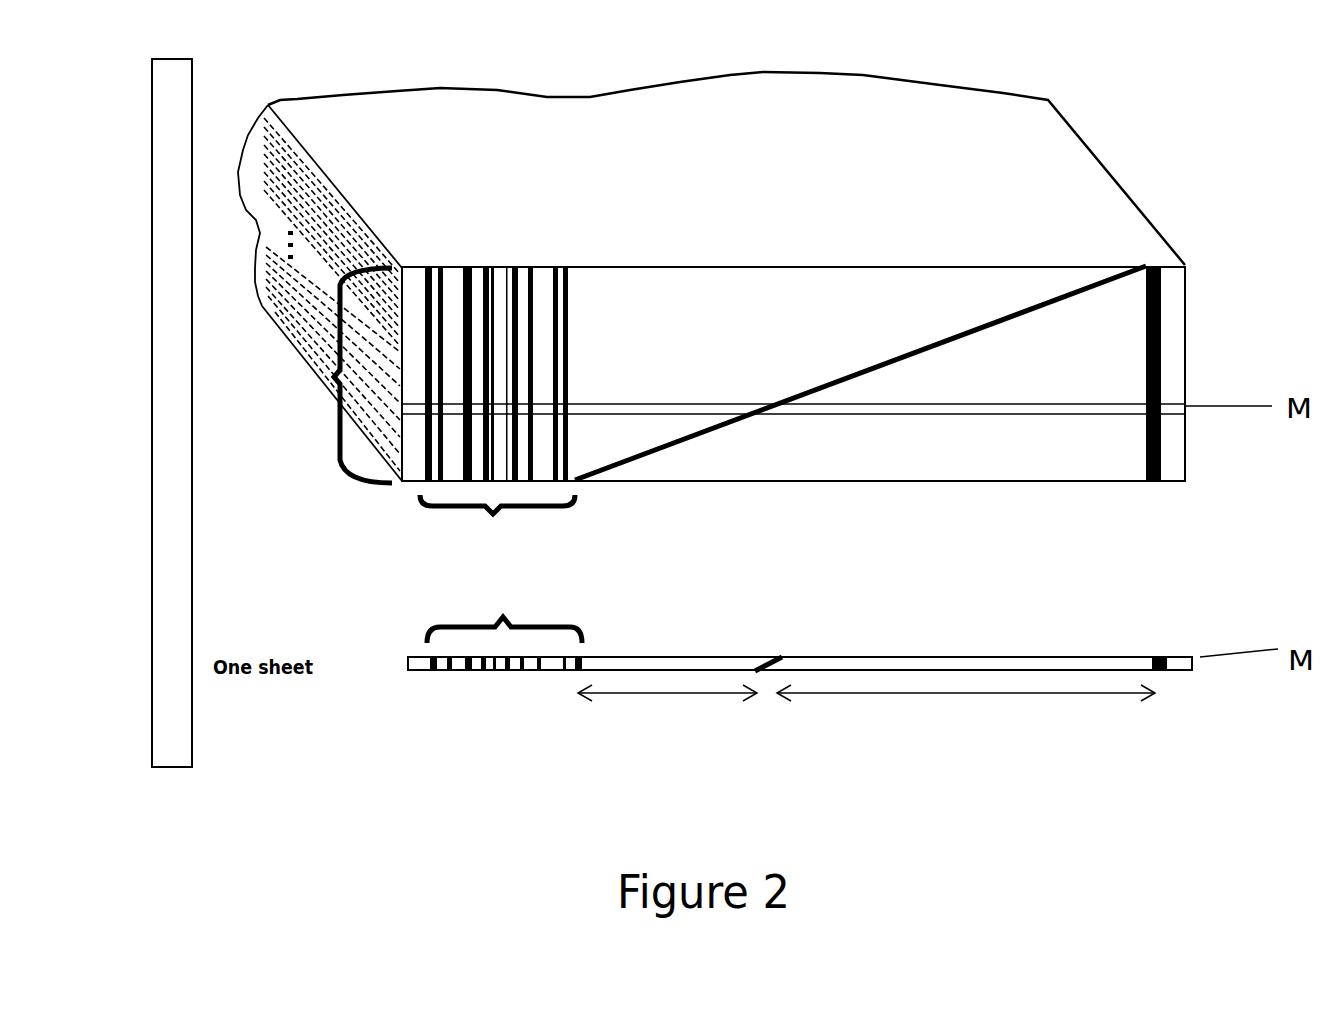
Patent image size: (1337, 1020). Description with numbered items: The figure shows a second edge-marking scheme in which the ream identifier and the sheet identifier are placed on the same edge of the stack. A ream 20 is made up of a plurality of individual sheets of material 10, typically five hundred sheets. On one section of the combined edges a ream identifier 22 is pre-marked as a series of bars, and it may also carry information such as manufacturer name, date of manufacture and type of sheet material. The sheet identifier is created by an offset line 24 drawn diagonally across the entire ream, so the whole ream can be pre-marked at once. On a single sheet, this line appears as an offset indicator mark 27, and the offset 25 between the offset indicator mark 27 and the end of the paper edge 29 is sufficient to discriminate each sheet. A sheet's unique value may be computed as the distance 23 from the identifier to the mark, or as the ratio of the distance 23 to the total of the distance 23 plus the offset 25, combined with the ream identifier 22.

The sheets of material 10 is at (297, 318).
The ream 20 is at (334, 377).
The ream identifier 22 is at (493, 513).
The distance 23 is at (653, 700).
The offset line 24 is at (870, 375).
The offset 25 is at (1020, 697).
The offset indicator mark 27 is at (789, 646).
The end of paper edge 29 is at (1182, 700).